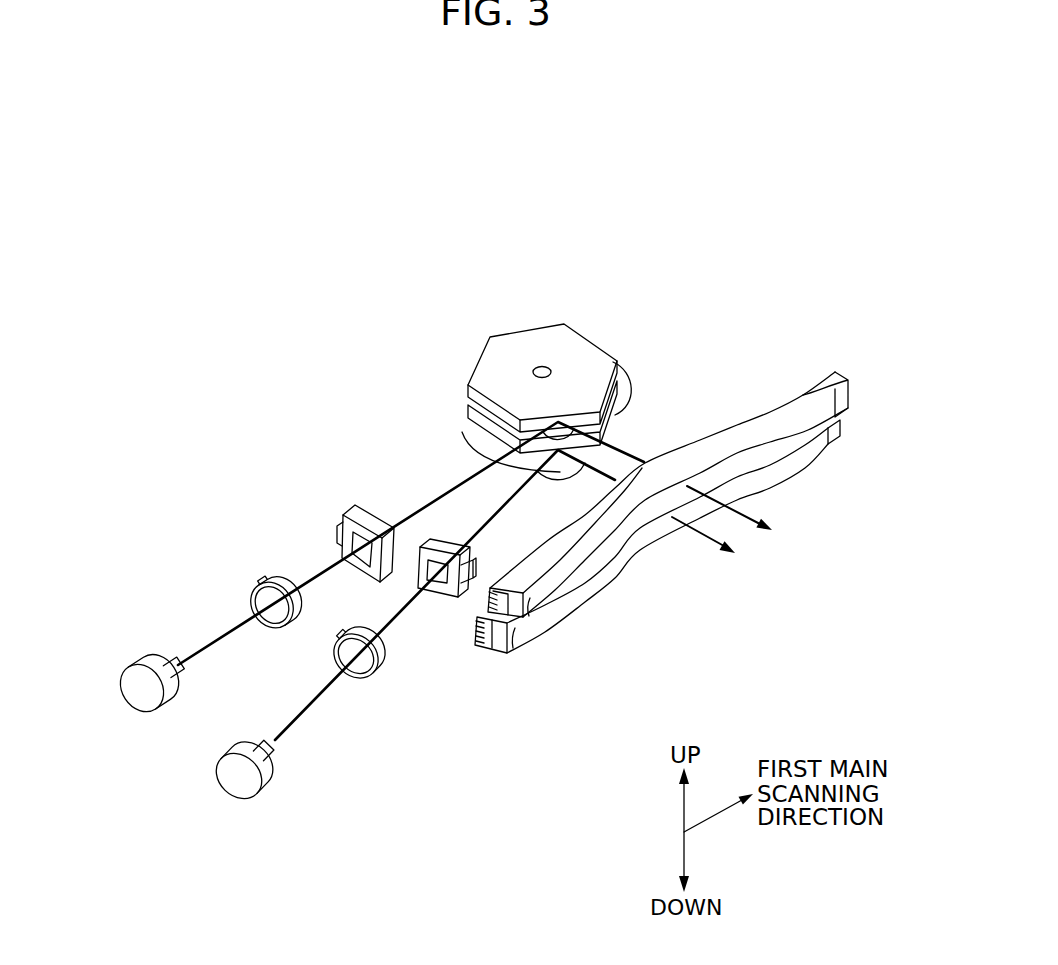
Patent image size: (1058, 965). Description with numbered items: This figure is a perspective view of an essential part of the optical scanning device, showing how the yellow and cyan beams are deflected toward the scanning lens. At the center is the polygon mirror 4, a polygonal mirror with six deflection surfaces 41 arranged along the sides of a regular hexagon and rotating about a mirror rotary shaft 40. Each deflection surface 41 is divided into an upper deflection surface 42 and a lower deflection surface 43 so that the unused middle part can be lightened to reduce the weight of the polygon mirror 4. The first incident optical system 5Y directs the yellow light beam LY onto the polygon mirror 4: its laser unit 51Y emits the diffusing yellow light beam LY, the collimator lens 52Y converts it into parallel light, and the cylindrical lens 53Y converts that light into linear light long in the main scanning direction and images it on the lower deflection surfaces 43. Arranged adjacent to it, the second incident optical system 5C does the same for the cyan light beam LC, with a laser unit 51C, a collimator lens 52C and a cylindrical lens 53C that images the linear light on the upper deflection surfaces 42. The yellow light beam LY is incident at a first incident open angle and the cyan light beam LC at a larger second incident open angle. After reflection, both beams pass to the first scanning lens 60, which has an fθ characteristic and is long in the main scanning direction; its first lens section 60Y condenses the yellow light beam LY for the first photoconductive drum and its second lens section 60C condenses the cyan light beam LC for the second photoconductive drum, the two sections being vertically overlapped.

The polygon mirror 4 is at (570, 268).
The mirror rotary shaft 40 is at (542, 366).
The deflection surface 41 is at (680, 252).
The upper deflection surface 42 is at (596, 395).
The lower deflection surface 43 is at (612, 416).
The second incident optical system 5C is at (262, 463).
The laser unit 51C is at (157, 655).
The collimator lens 52C is at (258, 590).
The cylindrical lens 53C is at (348, 537).
The first incident optical system 5Y is at (498, 718).
The laser unit 51Y is at (268, 762).
The collimator lens 52Y is at (377, 667).
The cylindrical lens 53Y is at (437, 597).
The first scanning lens 60 is at (858, 362).
The second lens section 60C is at (812, 397).
The first lens section 60Y is at (797, 465).
The cyan light beam LC is at (200, 652).
The yellow light beam LY is at (290, 722).